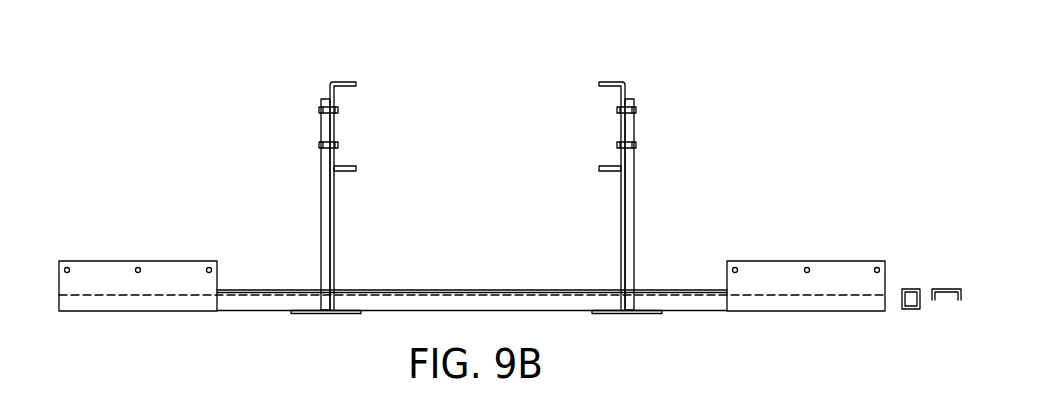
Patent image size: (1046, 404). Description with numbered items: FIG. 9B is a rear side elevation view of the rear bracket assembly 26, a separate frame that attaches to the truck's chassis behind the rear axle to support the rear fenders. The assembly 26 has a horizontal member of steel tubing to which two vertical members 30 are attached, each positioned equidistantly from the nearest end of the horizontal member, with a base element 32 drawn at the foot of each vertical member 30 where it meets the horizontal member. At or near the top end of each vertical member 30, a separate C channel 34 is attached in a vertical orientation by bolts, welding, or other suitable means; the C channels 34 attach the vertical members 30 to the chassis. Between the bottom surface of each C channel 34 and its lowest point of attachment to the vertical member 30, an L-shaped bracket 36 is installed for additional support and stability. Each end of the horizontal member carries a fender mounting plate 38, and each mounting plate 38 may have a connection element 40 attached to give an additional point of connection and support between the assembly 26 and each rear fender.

The rear bracket assembly 26 is at (174, 152).
The vertical member 30 is at (321, 246).
The base plate 32 is at (315, 314).
The C channel 34 is at (346, 81).
The L-shaped bracket 36 is at (350, 171).
The fender mounting plate 38 is at (93, 268).
The connection element 40 is at (911, 288).